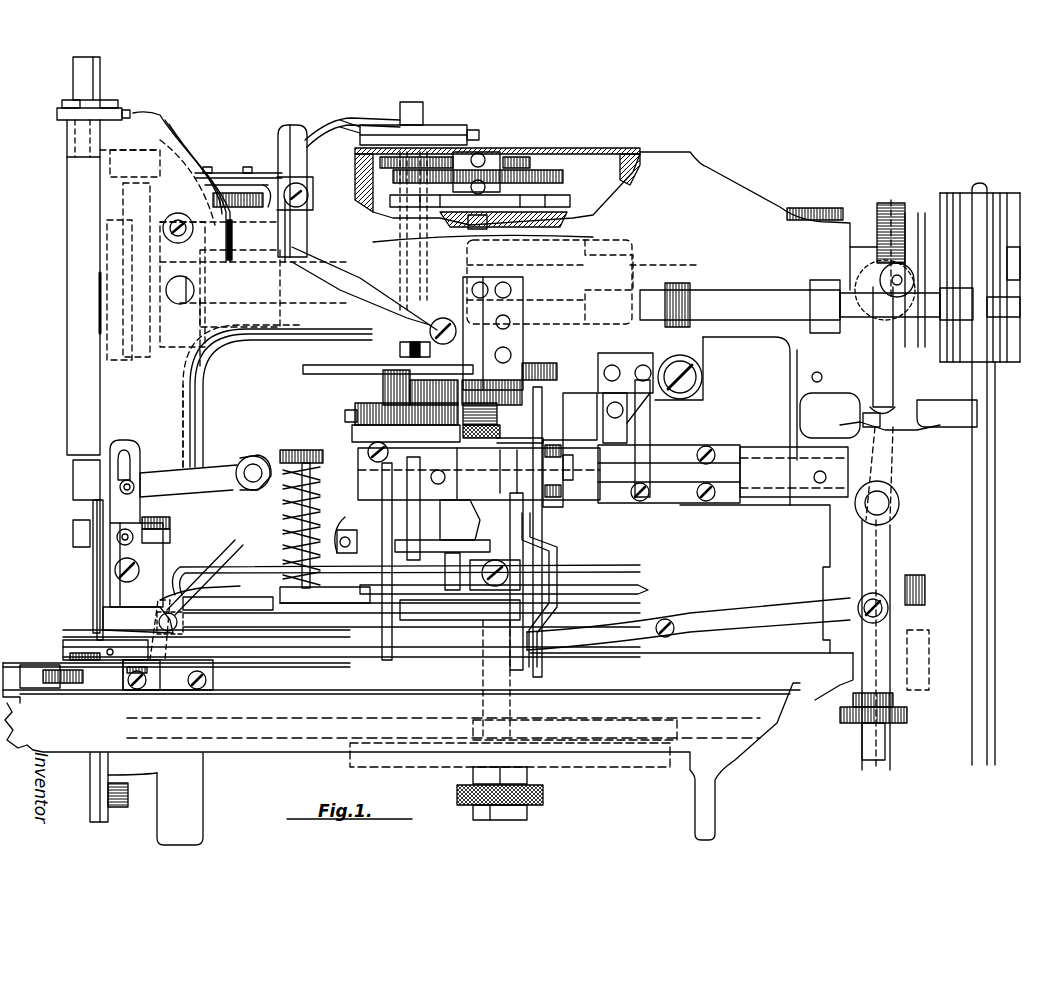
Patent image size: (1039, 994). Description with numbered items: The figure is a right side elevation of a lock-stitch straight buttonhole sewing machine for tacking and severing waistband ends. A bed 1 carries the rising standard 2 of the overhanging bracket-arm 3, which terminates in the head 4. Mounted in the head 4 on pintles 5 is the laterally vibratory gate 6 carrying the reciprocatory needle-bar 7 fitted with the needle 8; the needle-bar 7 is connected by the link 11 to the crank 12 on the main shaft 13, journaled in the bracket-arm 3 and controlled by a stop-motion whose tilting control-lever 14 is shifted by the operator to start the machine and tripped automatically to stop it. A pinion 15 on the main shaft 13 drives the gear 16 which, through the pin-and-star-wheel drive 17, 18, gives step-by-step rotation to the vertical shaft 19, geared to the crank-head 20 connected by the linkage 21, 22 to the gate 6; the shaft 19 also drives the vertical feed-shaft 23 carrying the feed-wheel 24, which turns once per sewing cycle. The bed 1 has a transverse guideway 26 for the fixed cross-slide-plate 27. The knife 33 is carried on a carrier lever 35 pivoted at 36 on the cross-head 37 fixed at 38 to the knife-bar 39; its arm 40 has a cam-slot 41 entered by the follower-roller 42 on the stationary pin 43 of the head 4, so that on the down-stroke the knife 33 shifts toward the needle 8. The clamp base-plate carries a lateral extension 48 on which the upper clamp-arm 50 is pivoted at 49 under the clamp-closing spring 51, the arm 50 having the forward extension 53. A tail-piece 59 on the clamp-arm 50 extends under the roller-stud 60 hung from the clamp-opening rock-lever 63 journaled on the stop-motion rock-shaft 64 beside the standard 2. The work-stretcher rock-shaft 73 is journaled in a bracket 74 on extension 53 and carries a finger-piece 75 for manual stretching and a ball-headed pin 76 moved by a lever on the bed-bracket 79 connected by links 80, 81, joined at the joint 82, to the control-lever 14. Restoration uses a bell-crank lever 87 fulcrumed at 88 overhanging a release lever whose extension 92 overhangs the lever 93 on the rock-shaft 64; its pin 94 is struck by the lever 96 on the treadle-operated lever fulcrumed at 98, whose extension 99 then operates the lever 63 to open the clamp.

The bed 1 is at (312, 690).
The standard 2 is at (720, 548).
The bracket-arm 3 is at (318, 322).
The head 4 is at (192, 422).
The pintles 5 is at (168, 138).
The gate 6 is at (67, 360).
The needle-bar 7 is at (100, 552).
The needle 8 is at (92, 600).
The link 11 is at (125, 318).
The crank 12 is at (125, 290).
The main shaft 13 is at (327, 268).
The control-lever 14 is at (893, 575).
The pinion 15 is at (585, 318).
The gear 16 is at (596, 238).
The pin of pin-and-star-wheel drive 17 is at (572, 192).
The star-wheel of pin-and-star-wheel drive 18 is at (553, 182).
The vertical shaft 19 is at (475, 225).
The crank-head 20 is at (440, 125).
The linkage 21 is at (335, 122).
The linkage 22 is at (222, 172).
The feed-shaft 23 is at (483, 675).
The feed-wheel 24 is at (350, 766).
The guideway 26 is at (63, 650).
The cross-slide-plate 27 is at (83, 685).
The knife 33 is at (105, 615).
The carrier lever 35 is at (172, 521).
The pivot 36 is at (172, 537).
The cross-head 37 is at (105, 535).
The fastening 38 is at (73, 540).
The knife-bar 39 is at (73, 500).
The arm 40 is at (120, 440).
The cam-slot 41 is at (122, 455).
The follower-roller 42 is at (125, 483).
The stationary pin 43 is at (122, 492).
The lateral extension 48 is at (300, 657).
The pivot 49 is at (385, 660).
The upper clamp-arm 50 is at (290, 608).
The clamp-closing spring 51 is at (285, 545).
The forward extension 53 is at (185, 620).
The tail-piece 59 is at (598, 586).
The roller-stud 60 is at (508, 573).
The clamp-opening rock-lever 63 is at (545, 435).
The rock-shaft 64 is at (678, 470).
The rock-shaft 73 is at (185, 600).
The bracket 74 is at (262, 597).
The finger-piece 75 is at (228, 545).
The ball-headed pin 76 is at (160, 690).
The bed-bracket 79 is at (140, 690).
The link 80 is at (420, 655).
The link 81 is at (698, 618).
The joint 82 is at (545, 635).
The bell-crank lever 87 is at (340, 530).
The fulcrum 88 is at (345, 532).
The extension 92 is at (420, 515).
The lever 93 is at (408, 555).
The pin 94 is at (440, 548).
The lever 96 is at (540, 405).
The fulcrum 98 is at (565, 462).
The extension 99 is at (552, 540).